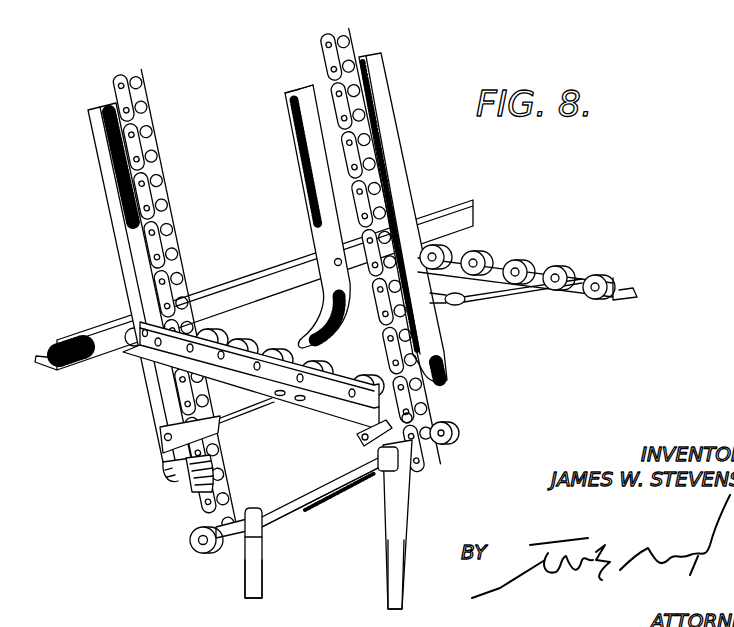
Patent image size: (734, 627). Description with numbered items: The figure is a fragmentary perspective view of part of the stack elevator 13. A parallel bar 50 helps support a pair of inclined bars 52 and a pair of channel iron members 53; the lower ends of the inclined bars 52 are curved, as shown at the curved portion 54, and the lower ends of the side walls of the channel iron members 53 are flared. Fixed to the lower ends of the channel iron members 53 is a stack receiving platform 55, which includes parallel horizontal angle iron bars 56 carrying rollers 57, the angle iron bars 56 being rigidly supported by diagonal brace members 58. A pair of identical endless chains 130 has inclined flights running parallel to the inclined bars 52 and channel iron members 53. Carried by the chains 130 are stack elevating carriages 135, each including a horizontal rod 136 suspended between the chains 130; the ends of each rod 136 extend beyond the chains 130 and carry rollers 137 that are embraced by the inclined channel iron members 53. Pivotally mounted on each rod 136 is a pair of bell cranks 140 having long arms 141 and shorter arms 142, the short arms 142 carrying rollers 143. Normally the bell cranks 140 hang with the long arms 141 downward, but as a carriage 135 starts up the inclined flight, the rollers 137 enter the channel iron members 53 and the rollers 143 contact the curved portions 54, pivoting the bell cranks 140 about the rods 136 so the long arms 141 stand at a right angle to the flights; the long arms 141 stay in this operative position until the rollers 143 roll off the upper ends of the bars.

The stack elevator 13 is at (167, 163).
The parallel bar 50 is at (82, 338).
The inclined bar 52 is at (308, 183).
The channel iron member 53 is at (122, 231).
The curved portion 54 is at (327, 316).
The stack receiving platform 55 is at (583, 268).
The horizontal angle iron bar 56 is at (348, 407).
The roller 57 is at (546, 267).
The diagonal brace member 58 is at (250, 405).
The endless chain 130 is at (138, 99).
The stack elevating carriage 135 is at (334, 496).
The horizontal rod 136 is at (290, 507).
The roller 137 is at (190, 542).
The bell crank 140 is at (262, 552).
The long arm 141 is at (247, 586).
The short arm 142 is at (377, 440).
The roller 143 is at (421, 411).